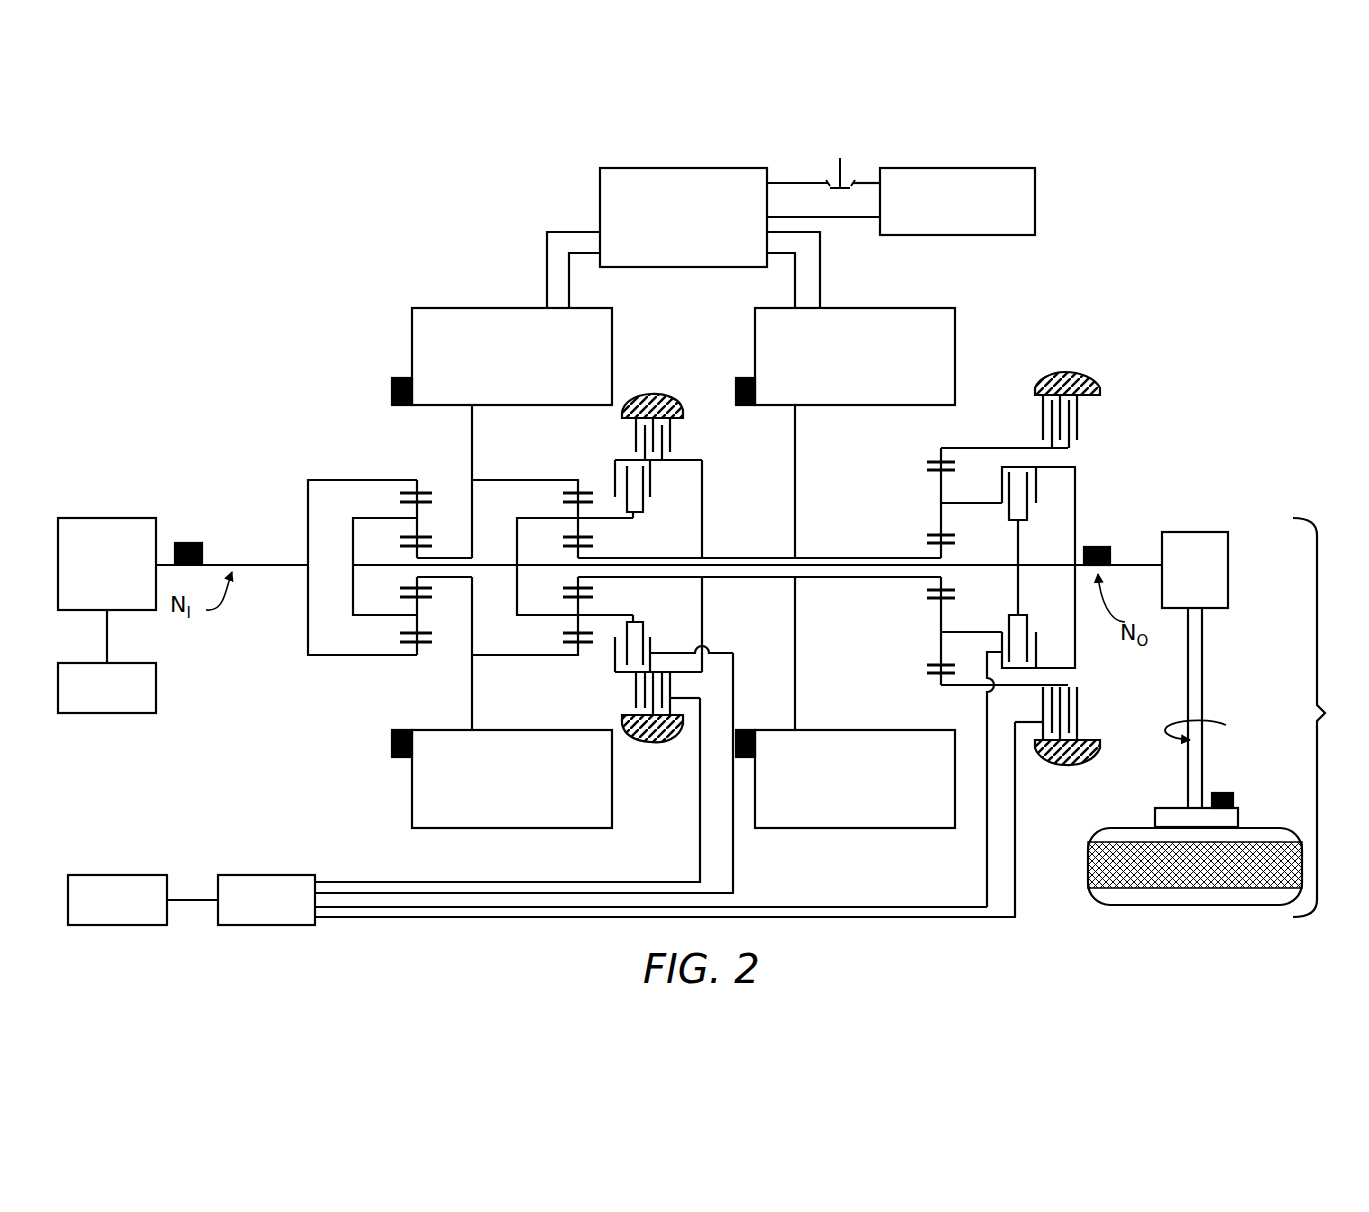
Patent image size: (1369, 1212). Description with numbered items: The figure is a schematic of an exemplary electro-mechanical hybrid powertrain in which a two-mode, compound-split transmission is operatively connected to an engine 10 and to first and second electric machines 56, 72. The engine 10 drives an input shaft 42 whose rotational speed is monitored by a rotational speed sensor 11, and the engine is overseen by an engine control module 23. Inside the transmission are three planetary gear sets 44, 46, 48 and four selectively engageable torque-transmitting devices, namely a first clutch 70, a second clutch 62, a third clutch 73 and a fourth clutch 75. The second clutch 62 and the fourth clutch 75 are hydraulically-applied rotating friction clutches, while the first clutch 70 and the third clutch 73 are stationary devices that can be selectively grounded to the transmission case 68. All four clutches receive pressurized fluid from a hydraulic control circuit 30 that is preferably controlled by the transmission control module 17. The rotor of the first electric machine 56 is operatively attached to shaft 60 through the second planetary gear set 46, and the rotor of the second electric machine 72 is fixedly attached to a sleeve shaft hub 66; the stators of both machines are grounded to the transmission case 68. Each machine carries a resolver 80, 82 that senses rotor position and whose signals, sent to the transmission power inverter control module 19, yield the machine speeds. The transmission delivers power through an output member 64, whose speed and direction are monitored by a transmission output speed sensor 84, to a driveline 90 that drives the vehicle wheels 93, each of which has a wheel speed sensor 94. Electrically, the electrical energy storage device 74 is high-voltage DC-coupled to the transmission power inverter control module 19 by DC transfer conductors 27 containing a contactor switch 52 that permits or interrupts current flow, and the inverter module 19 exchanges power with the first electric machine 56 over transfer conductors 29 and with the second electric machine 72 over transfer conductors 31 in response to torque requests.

The engine 10 is at (114, 518).
The rotational speed sensor 11 is at (188, 542).
The transmission control module (TCM) 17 is at (108, 875).
The transmission power inverter control module (TPIM) 19 is at (600, 186).
The engine control module (ECM) 23 is at (150, 712).
The DC transfer conductors 27 is at (783, 183).
The transfer conductors 29 is at (547, 268).
The hydraulic control circuit (HYD) 30 is at (235, 875).
The transfer conductors 31 is at (820, 268).
The input shaft 42 is at (268, 562).
The first planetary gear set 44 is at (410, 476).
The second planetary gear set 46 is at (574, 476).
The third planetary gear set 48 is at (936, 448).
The contactor switch 52 is at (842, 160).
The first electric machine (MG-A) 56 is at (412, 337).
The shaft 60 is at (992, 565).
The clutch C2 62 is at (1036, 506).
The output member 64 is at (1133, 565).
The sleeve shaft hub 66 is at (832, 558).
The transmission case 68 is at (648, 398).
The clutch C1 70 is at (1028, 410).
The second electric machine (MG-B) 72 is at (955, 332).
The clutch C3 73 is at (676, 440).
The electrical energy storage device (ESD) 74 is at (1035, 199).
The clutch C4 75 is at (658, 492).
The resolver 80 is at (392, 390).
The resolver 82 is at (745, 378).
The transmission output speed sensor 84 is at (1098, 547).
The driveline 90 is at (1325, 713).
The vehicle wheel 93 is at (1155, 818).
The wheel speed sensor 94 is at (1222, 793).